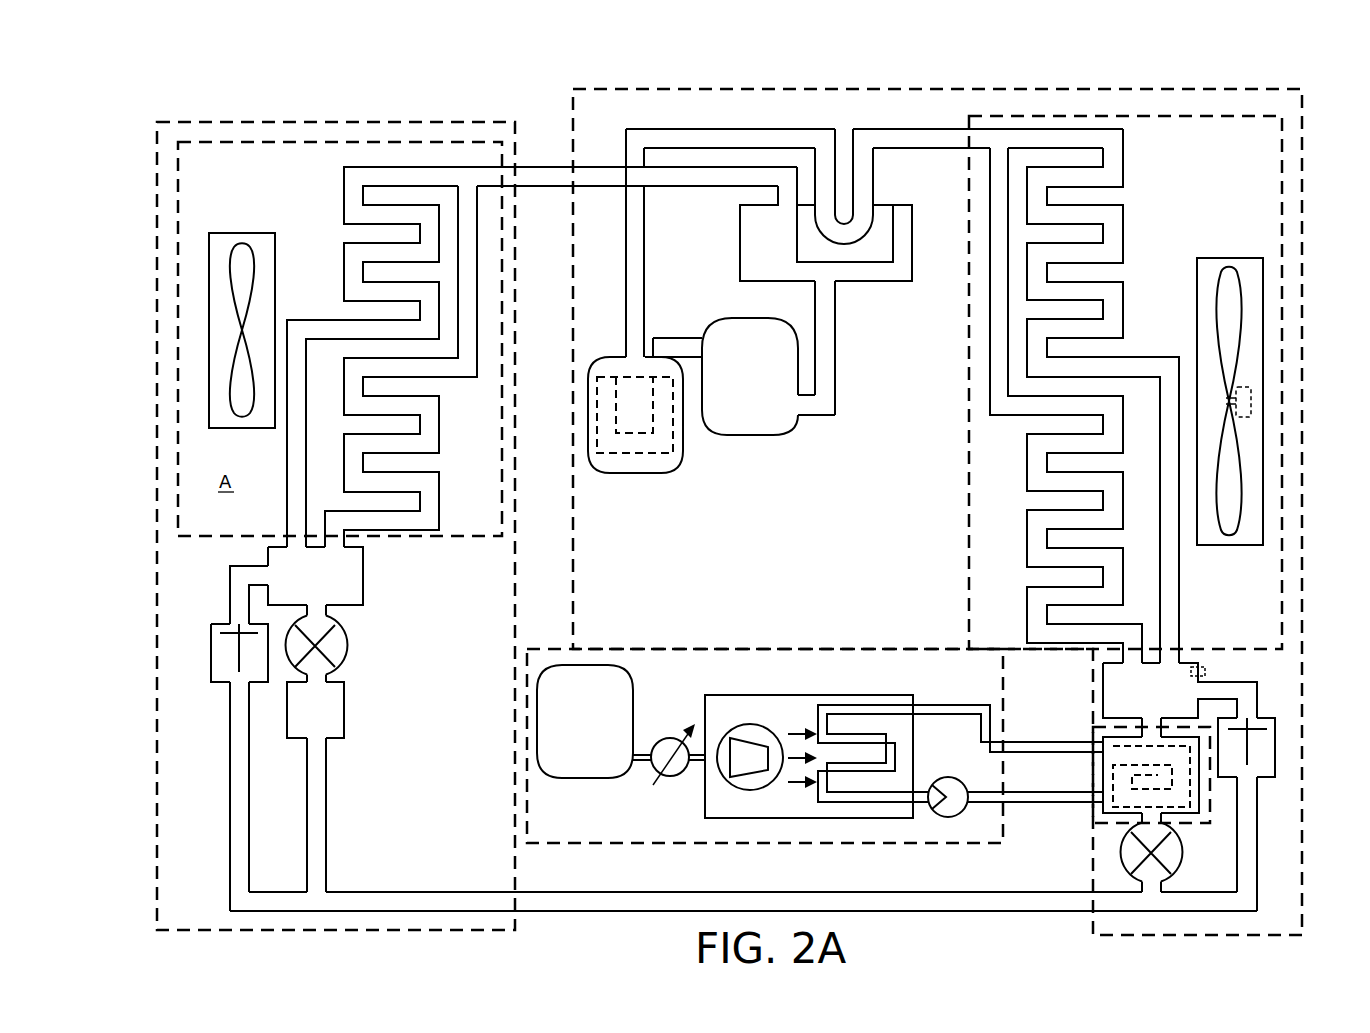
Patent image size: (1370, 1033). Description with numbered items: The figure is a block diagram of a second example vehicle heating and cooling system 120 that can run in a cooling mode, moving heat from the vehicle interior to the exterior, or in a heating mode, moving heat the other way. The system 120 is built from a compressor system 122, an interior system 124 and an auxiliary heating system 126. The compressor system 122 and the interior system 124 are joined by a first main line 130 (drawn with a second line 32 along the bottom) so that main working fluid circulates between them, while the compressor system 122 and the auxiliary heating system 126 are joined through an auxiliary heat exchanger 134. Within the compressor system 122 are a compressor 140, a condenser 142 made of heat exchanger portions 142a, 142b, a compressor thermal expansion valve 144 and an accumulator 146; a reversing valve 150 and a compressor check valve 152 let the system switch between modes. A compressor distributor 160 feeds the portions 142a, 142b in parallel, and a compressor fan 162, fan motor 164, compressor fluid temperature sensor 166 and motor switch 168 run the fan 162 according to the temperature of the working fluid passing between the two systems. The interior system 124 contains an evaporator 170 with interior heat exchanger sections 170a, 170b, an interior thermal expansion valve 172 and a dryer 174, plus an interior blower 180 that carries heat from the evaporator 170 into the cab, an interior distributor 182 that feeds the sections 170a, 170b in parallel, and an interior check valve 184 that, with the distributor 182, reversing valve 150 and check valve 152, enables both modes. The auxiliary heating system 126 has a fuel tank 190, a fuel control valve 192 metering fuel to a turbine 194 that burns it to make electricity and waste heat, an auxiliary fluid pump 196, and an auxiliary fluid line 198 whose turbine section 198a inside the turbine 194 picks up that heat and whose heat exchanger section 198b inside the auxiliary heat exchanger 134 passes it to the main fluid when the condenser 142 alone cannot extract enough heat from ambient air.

The refrigerant return line 32 is at (428, 900).
The vehicle heating and cooling system 120 is at (1303, 91).
The compressor system 122 is at (1290, 147).
The interior system 124 is at (325, 132).
The auxiliary heating system 126 is at (655, 663).
The first main line 130 is at (518, 311).
The auxiliary heat exchanger 134 is at (1110, 775).
The compressor 140 is at (755, 425).
The condenser 142 is at (1055, 352).
The heat exchanger portion 142a is at (1128, 184).
The heat exchanger portion 142b is at (1022, 513).
The compressor thermal expansion valve 144 is at (1170, 860).
The accumulator 146 is at (652, 465).
The reversing valve 150 is at (748, 240).
The compressor check valve 152 is at (1262, 730).
The compressor distributor 160 is at (1120, 690).
The compressor fan 162 is at (1235, 300).
The fan motor 164 is at (1252, 393).
The compressor fluid temperature sensor 166 is at (1205, 672).
The motor switch 168 is at (1245, 418).
The evaporator 170 is at (213, 150).
The interior heat exchanger section 170a is at (339, 224).
The interior heat exchanger section 170b is at (449, 456).
The interior thermal expansion valve 172 is at (350, 648).
The dryer 174 is at (335, 712).
The interior blower 180 is at (240, 270).
The interior distributor 182 is at (355, 582).
The interior check valve 184 is at (225, 655).
The fuel tank 190 is at (592, 768).
The fuel control valve 192 is at (667, 780).
The turbine 194 is at (752, 792).
The auxiliary fluid pump 196 is at (950, 815).
The auxiliary fluid line 198 is at (925, 712).
The turbine section 198a is at (810, 711).
The heat exchanger section 198b is at (1095, 736).